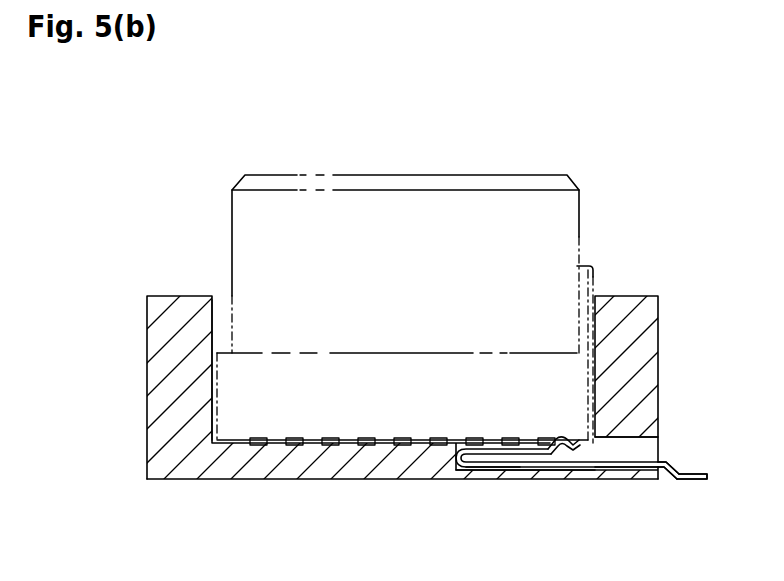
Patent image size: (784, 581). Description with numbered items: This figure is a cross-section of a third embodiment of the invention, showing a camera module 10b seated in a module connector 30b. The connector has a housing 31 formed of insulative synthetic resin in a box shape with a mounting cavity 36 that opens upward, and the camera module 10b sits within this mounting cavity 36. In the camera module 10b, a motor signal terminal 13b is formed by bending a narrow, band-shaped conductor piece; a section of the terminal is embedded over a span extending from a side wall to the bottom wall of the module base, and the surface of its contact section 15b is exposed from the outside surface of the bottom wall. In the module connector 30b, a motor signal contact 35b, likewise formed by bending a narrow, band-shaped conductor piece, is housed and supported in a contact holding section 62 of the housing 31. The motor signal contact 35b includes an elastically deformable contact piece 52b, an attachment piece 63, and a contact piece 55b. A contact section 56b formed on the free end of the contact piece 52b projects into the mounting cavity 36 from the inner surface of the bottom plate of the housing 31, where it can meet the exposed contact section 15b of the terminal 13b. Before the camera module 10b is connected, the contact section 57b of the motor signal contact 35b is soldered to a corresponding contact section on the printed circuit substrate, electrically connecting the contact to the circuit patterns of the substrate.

The camera module 10b is at (392, 168).
The module connector 30b is at (170, 250).
The mounting cavity 36 is at (225, 296).
The motor signal terminal 13b is at (582, 264).
The contact section 56b is at (565, 437).
The contact holding section 62 is at (602, 455).
The contact piece 55b is at (680, 448).
The housing 31 is at (147, 479).
The elastically deformable contact piece 52b is at (481, 466).
The motor signal contact 35b is at (510, 470).
The contact section 15b is at (563, 452).
The attachment piece 63 is at (613, 466).
The contact section 57b is at (696, 480).